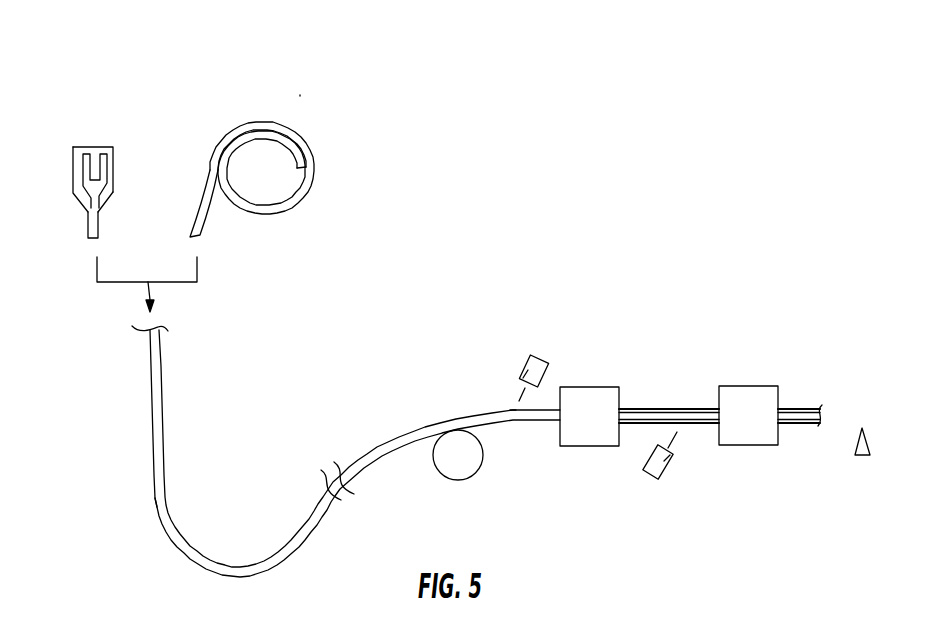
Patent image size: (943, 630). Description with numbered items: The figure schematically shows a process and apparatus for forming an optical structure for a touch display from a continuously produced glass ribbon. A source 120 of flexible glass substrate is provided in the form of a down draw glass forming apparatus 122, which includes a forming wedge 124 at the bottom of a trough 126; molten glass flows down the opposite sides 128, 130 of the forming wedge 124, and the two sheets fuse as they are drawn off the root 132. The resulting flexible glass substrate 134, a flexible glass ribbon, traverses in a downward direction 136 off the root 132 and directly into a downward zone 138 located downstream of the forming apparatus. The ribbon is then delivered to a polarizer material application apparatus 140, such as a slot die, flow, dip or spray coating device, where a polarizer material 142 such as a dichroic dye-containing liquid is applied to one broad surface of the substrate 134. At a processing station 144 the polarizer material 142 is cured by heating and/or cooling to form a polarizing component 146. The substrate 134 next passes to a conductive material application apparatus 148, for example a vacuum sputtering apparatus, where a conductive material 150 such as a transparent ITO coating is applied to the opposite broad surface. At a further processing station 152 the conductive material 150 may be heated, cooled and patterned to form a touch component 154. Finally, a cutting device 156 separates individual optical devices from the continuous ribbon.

The source of flexible glass substrate 120 is at (313, 82).
The down draw glass forming apparatus 122 is at (139, 118).
The forming wedge 124 is at (105, 194).
The trough 126 is at (92, 156).
The side of the forming wedge 128 is at (83, 194).
The side of the forming wedge 130 is at (103, 192).
The root 132 is at (103, 196).
The flexible glass substrate 134 is at (163, 413).
The downward direction 136 is at (152, 290).
The downward zone 138 is at (138, 502).
The polarizer material application apparatus 140 is at (526, 368).
The polarizer material 142 is at (512, 402).
The processing station 144 is at (590, 402).
The polarizing component 146 is at (639, 408).
The conductive material application apparatus 148 is at (670, 463).
The conductive material 150 is at (682, 431).
The processing station 152 is at (750, 393).
The touch component 154 is at (803, 424).
The cutting device 156 is at (873, 455).